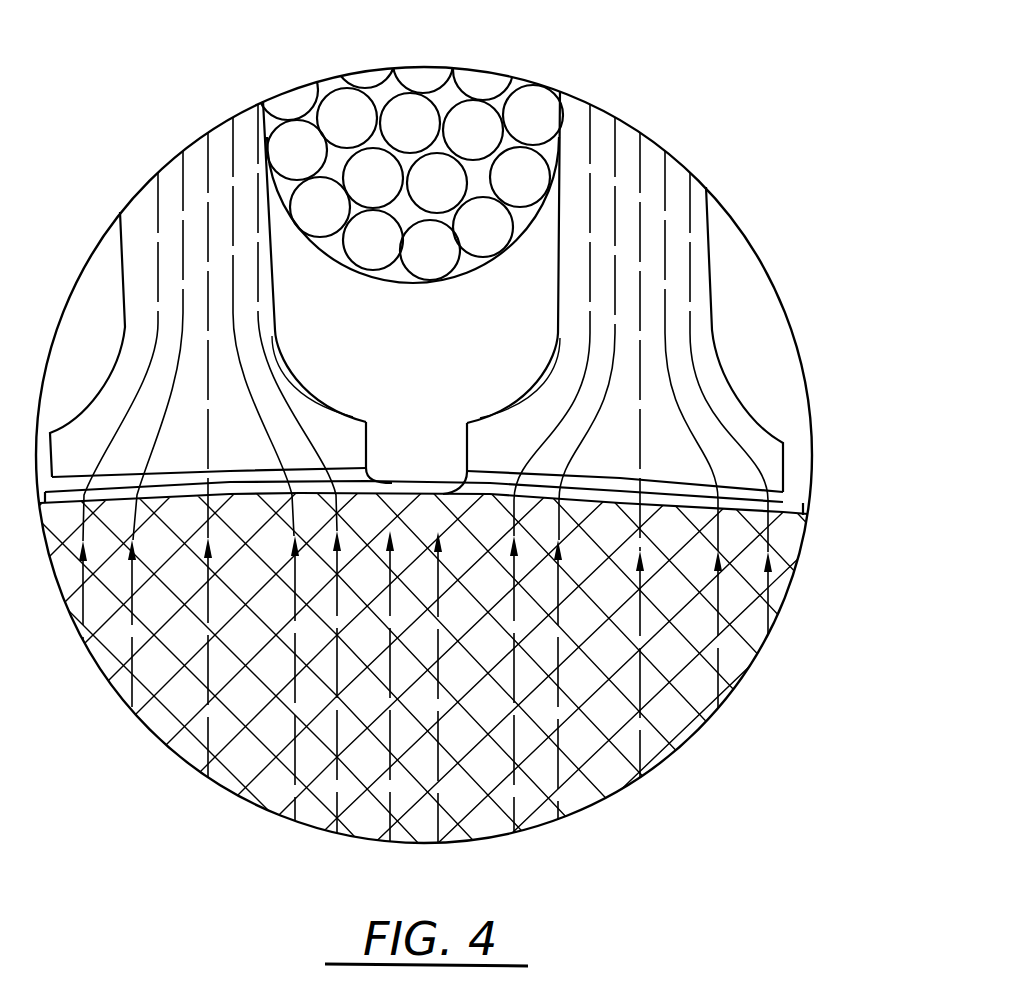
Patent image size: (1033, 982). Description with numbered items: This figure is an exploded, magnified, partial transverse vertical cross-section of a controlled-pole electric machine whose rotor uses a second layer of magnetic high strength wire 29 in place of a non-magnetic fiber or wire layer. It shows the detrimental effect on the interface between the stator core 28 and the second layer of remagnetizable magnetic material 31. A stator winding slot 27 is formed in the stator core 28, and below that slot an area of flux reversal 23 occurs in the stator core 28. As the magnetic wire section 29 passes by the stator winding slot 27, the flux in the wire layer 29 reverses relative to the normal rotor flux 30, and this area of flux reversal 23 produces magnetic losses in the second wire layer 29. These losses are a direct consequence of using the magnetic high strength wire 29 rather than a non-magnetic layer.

The area of flux reversal 23 is at (488, 307).
The stator winding slot 27 is at (429, 450).
The stator core 28 is at (648, 278).
The second layer of magnetic high strength wire 29 is at (782, 497).
The normal rotor flux 30 is at (662, 556).
The second layer of remagnetizable magnetic material 31 is at (626, 727).